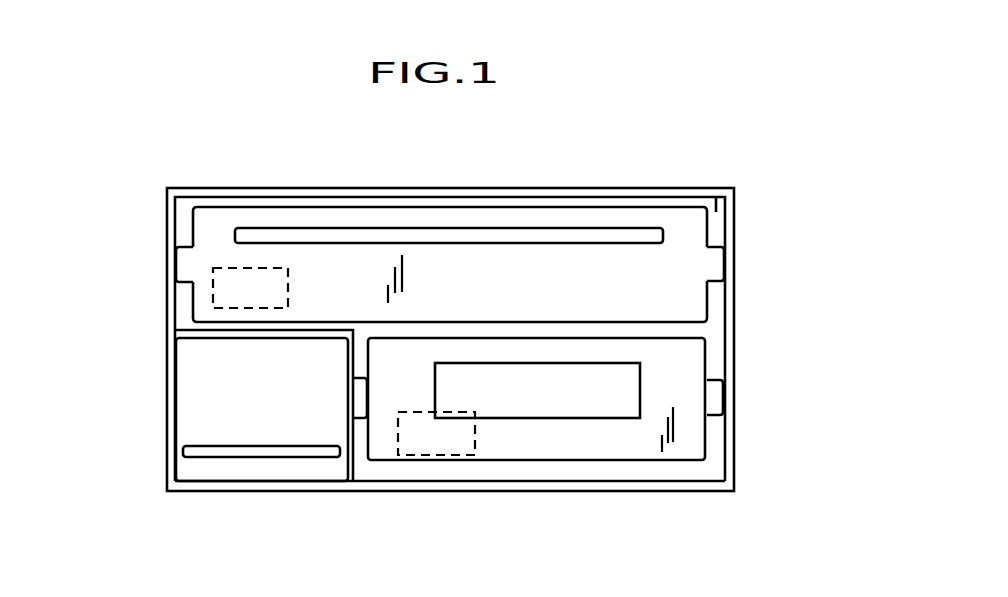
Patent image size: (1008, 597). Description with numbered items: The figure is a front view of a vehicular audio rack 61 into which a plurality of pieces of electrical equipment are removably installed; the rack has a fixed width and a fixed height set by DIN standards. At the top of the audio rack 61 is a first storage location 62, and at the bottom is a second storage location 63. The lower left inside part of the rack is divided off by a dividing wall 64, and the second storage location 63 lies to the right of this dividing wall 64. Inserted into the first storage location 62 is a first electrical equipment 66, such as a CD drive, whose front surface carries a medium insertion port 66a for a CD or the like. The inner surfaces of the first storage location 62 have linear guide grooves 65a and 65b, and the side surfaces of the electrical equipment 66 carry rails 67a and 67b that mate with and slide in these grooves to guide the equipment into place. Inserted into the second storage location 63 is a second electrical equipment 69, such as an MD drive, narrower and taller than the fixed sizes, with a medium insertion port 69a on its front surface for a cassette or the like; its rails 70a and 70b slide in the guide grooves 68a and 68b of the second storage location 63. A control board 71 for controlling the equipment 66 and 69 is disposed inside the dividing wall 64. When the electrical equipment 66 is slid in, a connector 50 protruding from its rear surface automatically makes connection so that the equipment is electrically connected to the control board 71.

The connector 50 is at (240, 267).
The vehicular audio rack 61 is at (641, 188).
The first storage location 62 is at (716, 188).
The second storage location 63 is at (713, 492).
The dividing wall 64 is at (212, 340).
The guide groove 65a is at (729, 268).
The guide groove 65b is at (178, 268).
The first electrical equipment 66 is at (220, 223).
The medium insertion port 66a is at (519, 225).
The rail 67a is at (729, 258).
The rail 67b is at (178, 261).
The guide groove 68a is at (729, 405).
The guide groove 68b is at (360, 413).
The second electrical equipment 69 is at (642, 462).
The medium insertion port 69a is at (583, 420).
The rail 70a is at (729, 396).
The rail 70b is at (360, 422).
The control board 71 is at (235, 460).